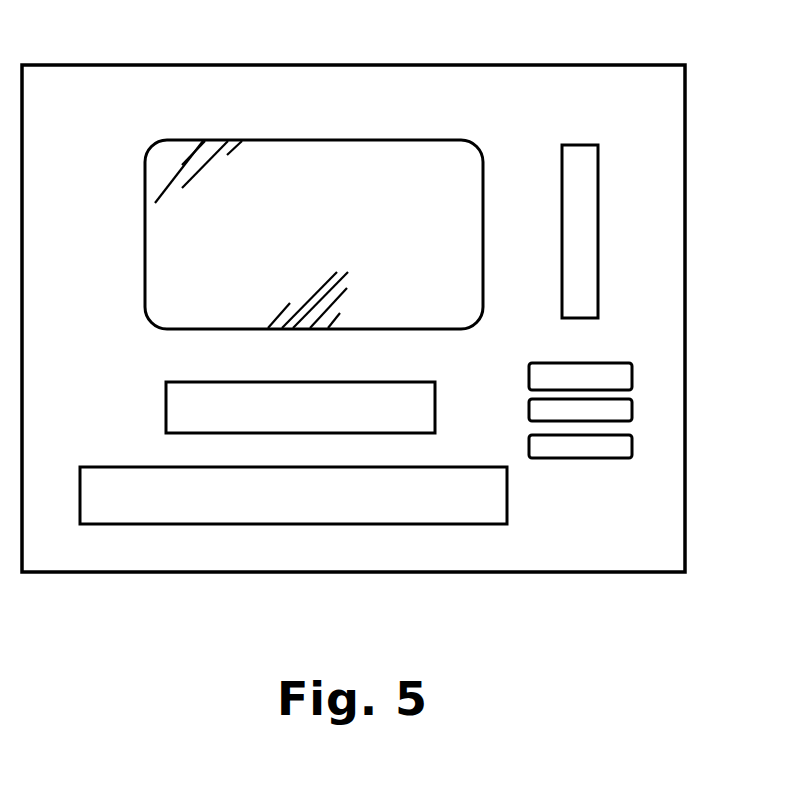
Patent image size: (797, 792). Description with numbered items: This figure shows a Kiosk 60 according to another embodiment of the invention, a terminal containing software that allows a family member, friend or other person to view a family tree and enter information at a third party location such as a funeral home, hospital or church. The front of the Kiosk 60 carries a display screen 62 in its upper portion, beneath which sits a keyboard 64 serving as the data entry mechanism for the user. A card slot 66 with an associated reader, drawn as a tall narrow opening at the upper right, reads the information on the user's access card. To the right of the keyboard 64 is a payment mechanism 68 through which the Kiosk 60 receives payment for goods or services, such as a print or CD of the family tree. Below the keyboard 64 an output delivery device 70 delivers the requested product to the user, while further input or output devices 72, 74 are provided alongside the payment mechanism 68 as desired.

The Kiosk 60 is at (598, 572).
The display screen 62 is at (298, 150).
The keyboard 64 is at (170, 392).
The card slot 66 is at (580, 148).
The payment mechanism 68 is at (628, 372).
The output delivery device 70 is at (510, 505).
The input or output device 72 is at (625, 409).
The input or output device 74 is at (617, 450).